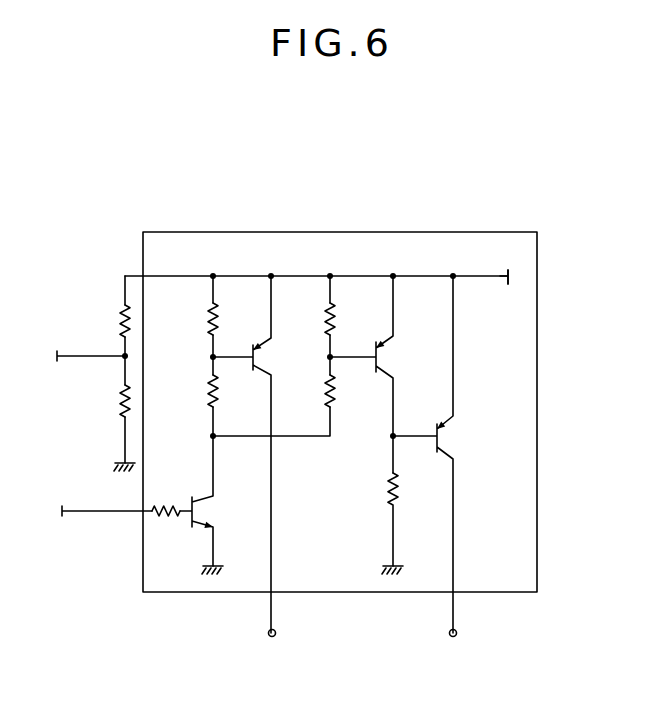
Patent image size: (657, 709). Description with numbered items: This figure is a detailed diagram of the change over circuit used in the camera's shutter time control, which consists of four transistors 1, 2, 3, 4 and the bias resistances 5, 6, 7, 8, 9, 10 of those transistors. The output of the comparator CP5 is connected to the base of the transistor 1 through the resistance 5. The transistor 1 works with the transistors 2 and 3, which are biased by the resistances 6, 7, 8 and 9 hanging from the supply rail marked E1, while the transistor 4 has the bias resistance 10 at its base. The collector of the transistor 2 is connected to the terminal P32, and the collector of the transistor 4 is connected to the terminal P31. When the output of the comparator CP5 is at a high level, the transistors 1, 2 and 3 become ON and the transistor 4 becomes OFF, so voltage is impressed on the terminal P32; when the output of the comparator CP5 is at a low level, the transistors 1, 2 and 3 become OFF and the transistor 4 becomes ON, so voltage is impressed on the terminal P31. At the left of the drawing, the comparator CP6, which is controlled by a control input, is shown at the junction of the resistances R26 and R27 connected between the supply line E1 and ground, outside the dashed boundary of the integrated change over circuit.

The transistor 1 is at (212, 513).
The transistor 2 is at (264, 360).
The transistor 3 is at (386, 359).
The transistor 4 is at (447, 439).
The resistance 5 is at (168, 505).
The bias resistance 6 is at (220, 394).
The bias resistance 7 is at (220, 321).
The bias resistance 8 is at (336, 320).
The bias resistance 9 is at (336, 393).
The bias resistance 10 is at (400, 490).
The resistor R26 is at (120, 325).
The resistor R27 is at (120, 404).
The comparator CP5 is at (99, 526).
The comparator CP6 is at (83, 374).
The supply voltage terminal E1 is at (507, 265).
The terminal P31 is at (459, 651).
The terminal P32 is at (278, 651).